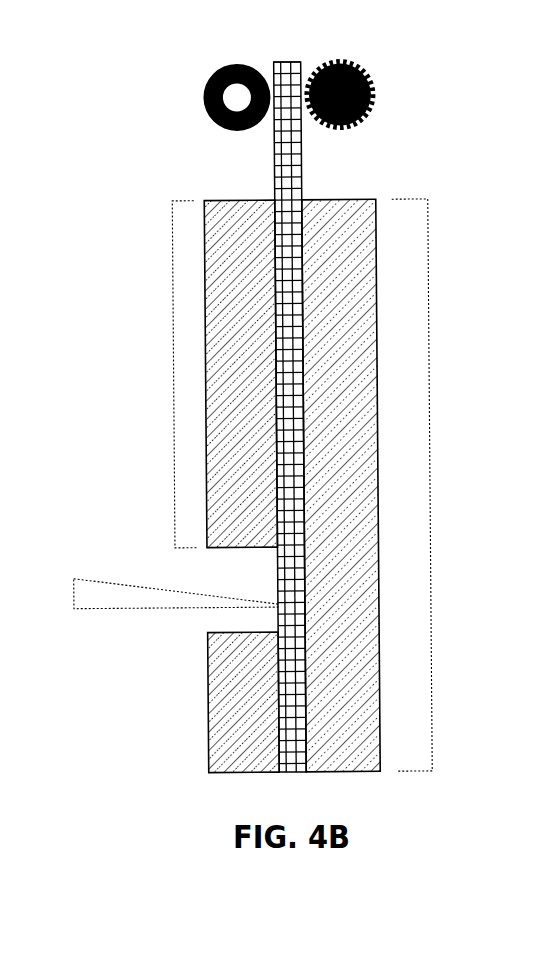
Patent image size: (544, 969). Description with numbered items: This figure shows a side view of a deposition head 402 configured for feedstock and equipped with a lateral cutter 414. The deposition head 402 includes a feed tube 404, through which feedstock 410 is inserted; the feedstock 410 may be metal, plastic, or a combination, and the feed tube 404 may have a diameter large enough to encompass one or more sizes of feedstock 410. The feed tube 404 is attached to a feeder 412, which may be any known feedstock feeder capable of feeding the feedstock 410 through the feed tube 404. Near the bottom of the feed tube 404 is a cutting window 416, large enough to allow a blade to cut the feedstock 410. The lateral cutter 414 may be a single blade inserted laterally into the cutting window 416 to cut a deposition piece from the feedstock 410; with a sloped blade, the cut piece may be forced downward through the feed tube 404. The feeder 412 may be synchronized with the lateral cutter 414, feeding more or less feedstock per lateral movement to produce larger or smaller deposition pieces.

The deposition head 402 is at (428, 475).
The feed tube 404 is at (175, 378).
The feedstock 410 is at (255, 182).
The feeder 412 is at (374, 87).
The lateral cutter 414 is at (120, 583).
The cutting window 416 is at (213, 624).